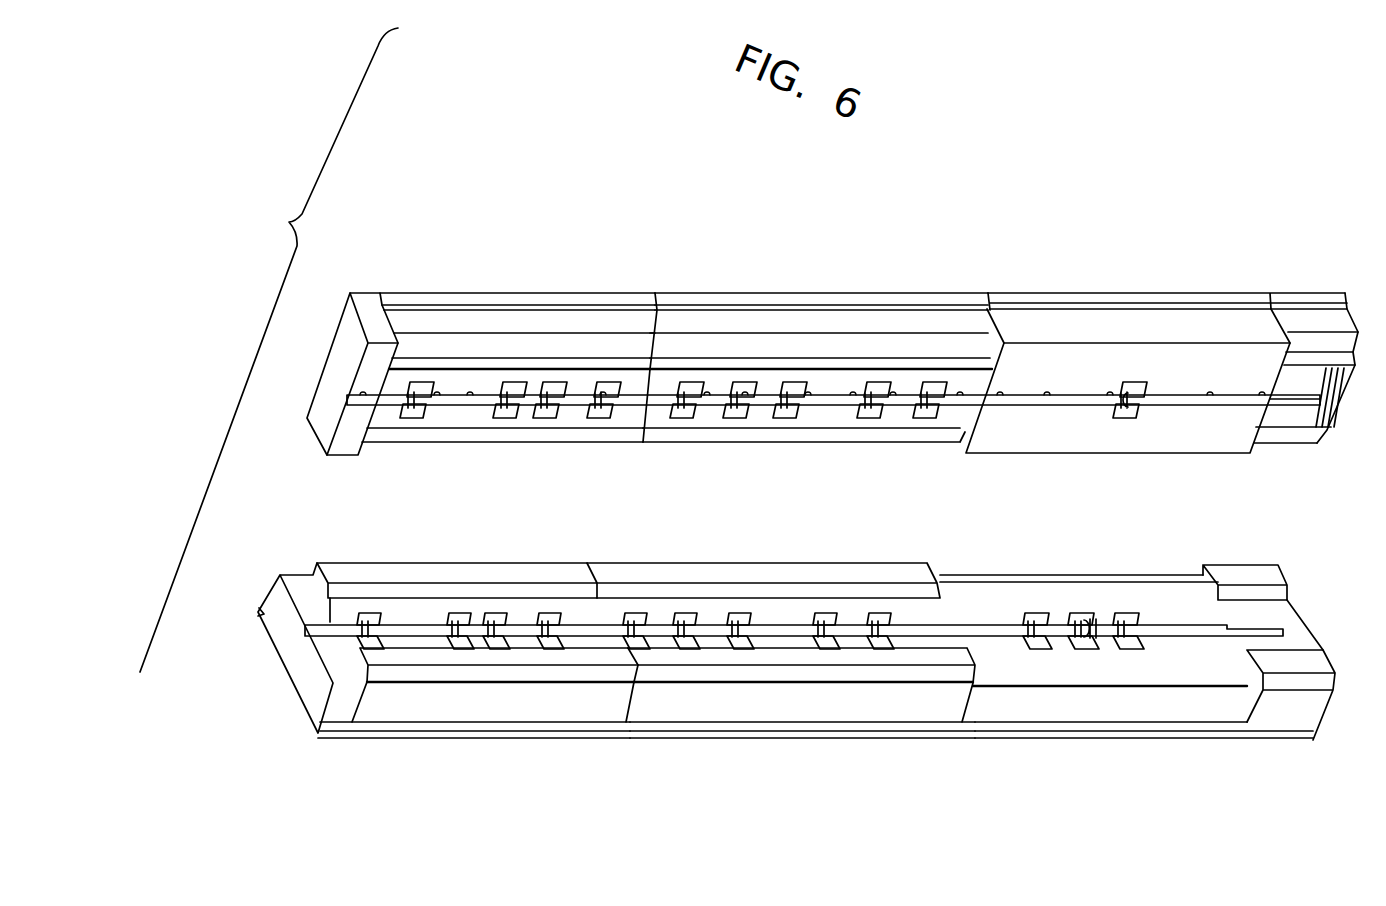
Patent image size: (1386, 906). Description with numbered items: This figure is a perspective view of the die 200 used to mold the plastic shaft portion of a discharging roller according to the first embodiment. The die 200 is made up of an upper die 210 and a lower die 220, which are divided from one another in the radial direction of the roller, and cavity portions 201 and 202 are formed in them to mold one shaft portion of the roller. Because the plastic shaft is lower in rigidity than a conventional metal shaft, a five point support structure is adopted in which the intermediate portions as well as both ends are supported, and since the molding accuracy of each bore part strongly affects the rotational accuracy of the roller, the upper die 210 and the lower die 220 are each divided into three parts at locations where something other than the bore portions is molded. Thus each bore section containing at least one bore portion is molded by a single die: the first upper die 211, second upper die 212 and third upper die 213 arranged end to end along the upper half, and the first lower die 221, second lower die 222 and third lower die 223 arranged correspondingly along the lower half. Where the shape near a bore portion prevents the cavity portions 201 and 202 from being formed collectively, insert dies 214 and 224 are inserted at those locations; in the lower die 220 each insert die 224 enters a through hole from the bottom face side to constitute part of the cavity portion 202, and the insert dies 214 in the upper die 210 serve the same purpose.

The die 200 is at (483, 170).
The cavity portion 201 is at (967, 400).
The cavity portion 202 is at (978, 626).
The upper die 210 is at (528, 464).
The first upper die 211 is at (516, 308).
The second upper die 212 is at (788, 300).
The third upper die 213 is at (1115, 312).
The insert die 214 is at (784, 420).
The lower die 220 is at (618, 546).
The first lower die 221 is at (488, 706).
The second lower die 222 is at (773, 708).
The third lower die 223 is at (1068, 712).
The insert die 224 is at (847, 650).